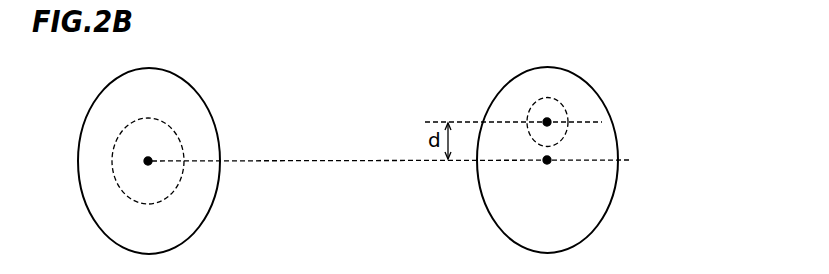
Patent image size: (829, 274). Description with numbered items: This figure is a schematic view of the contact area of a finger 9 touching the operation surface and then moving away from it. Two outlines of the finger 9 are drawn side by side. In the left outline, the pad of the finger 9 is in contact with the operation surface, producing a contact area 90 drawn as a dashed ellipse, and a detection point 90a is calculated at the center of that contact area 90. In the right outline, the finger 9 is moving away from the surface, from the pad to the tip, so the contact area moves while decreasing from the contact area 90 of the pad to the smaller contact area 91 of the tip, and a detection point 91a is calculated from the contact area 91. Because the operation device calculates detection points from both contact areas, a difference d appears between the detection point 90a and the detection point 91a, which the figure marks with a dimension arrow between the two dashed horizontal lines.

The finger 9 is at (163, 68).
The contact area 90 is at (168, 125).
The detection point 90a is at (152, 158).
The contact area 91 is at (565, 107).
The detection point 91a is at (551, 122).